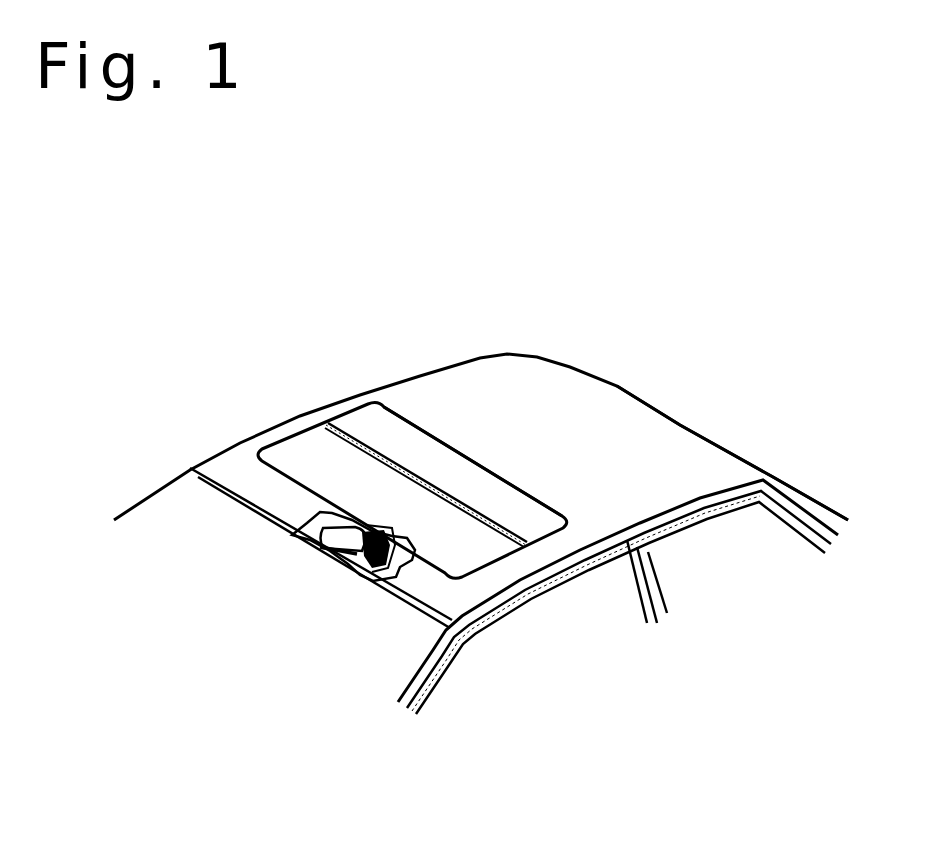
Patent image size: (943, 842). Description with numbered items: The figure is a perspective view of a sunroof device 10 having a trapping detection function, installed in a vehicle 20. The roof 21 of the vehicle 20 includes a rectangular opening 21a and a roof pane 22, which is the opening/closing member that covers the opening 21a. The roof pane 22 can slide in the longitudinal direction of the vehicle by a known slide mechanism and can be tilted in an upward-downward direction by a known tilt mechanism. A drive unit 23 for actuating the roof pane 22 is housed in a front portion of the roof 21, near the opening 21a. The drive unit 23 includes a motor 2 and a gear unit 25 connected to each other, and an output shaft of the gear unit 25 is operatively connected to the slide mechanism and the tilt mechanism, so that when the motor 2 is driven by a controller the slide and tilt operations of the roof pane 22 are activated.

The motor 2 is at (366, 586).
The sunroof device 10 is at (285, 400).
The vehicle 20 is at (484, 352).
The roof 21 is at (617, 388).
The opening 21a is at (498, 552).
The roof pane 22 is at (466, 458).
The drive unit 23 is at (325, 560).
The gear unit 25 is at (300, 541).